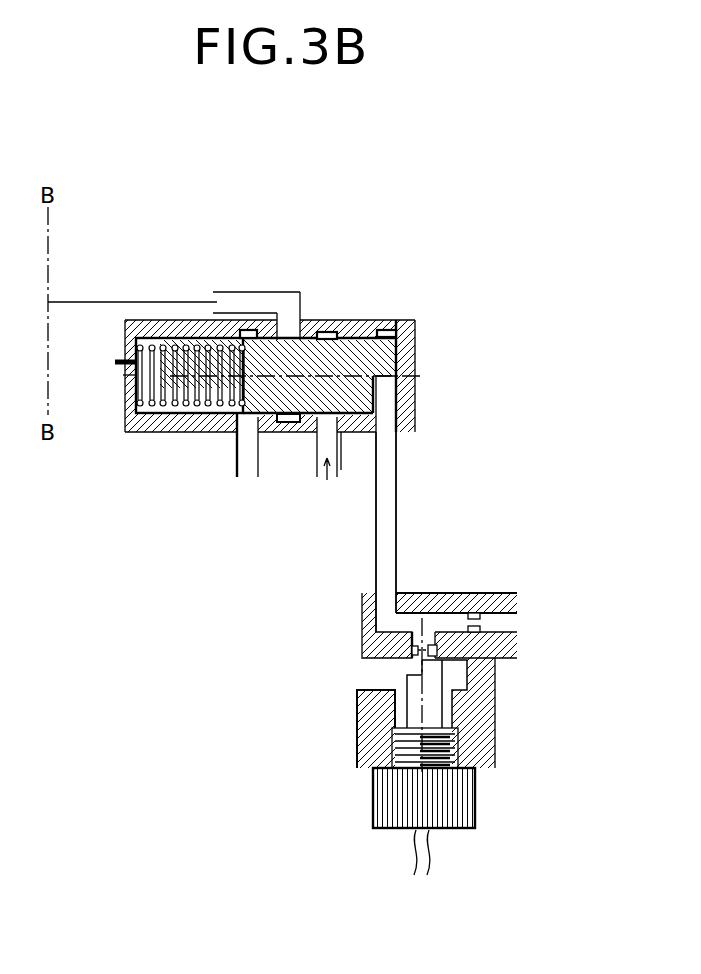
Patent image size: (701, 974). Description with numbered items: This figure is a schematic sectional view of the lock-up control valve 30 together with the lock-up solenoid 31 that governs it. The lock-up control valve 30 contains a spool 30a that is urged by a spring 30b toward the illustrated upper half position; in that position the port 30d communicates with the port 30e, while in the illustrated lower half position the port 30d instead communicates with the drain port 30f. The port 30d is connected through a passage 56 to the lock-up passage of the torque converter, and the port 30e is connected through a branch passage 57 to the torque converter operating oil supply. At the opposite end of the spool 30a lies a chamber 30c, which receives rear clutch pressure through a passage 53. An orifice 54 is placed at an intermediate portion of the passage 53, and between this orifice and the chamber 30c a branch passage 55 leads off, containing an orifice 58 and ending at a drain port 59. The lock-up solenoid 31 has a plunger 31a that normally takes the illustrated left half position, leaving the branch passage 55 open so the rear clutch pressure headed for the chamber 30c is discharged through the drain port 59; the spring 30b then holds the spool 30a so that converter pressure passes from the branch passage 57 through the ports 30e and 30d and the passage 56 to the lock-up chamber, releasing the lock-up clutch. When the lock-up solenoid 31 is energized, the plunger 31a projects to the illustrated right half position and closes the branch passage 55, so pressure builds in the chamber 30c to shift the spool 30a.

The lock-up control valve 30 is at (369, 311).
The spool 30a is at (194, 428).
The spring 30b is at (150, 393).
The chamber 30c is at (380, 390).
The port 30d is at (289, 323).
The port 30e is at (331, 424).
The drain port 30f is at (247, 425).
The lock-up solenoid 31 is at (376, 812).
The plunger 31a is at (462, 688).
The passage 53 is at (378, 537).
The orifice 54 is at (478, 612).
The branch passage 55 is at (432, 646).
The passage 56 is at (162, 302).
The branch passage 57 is at (341, 458).
The orifice 58 is at (437, 651).
The drain port 59 is at (368, 690).